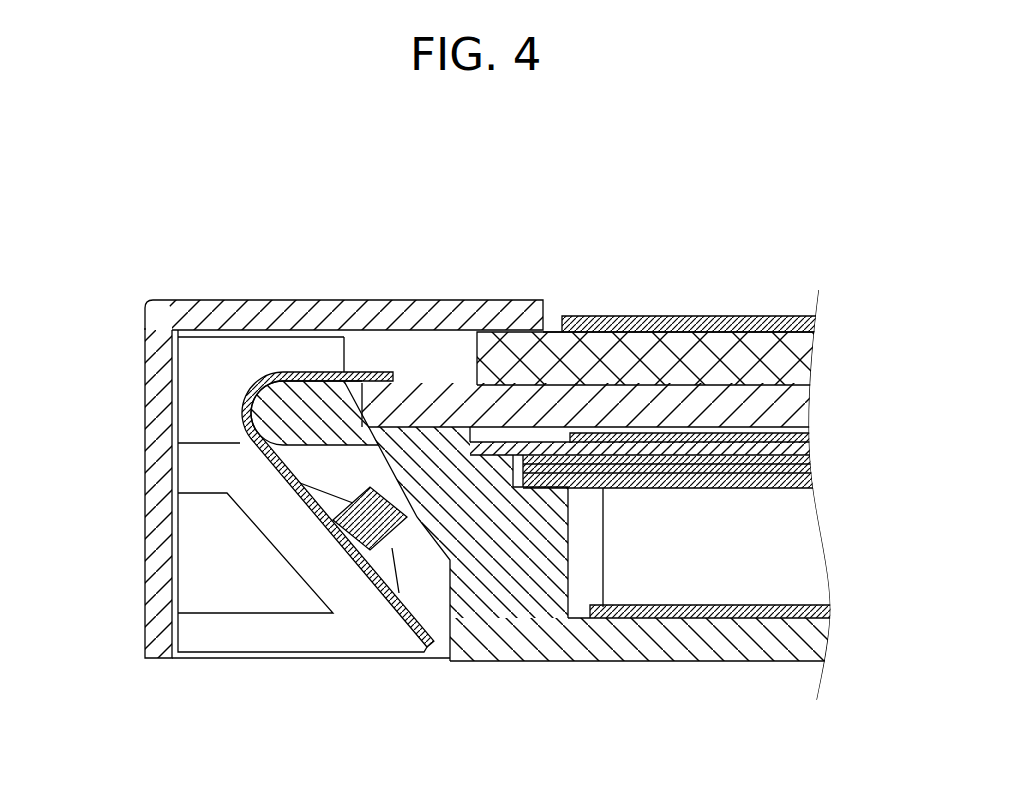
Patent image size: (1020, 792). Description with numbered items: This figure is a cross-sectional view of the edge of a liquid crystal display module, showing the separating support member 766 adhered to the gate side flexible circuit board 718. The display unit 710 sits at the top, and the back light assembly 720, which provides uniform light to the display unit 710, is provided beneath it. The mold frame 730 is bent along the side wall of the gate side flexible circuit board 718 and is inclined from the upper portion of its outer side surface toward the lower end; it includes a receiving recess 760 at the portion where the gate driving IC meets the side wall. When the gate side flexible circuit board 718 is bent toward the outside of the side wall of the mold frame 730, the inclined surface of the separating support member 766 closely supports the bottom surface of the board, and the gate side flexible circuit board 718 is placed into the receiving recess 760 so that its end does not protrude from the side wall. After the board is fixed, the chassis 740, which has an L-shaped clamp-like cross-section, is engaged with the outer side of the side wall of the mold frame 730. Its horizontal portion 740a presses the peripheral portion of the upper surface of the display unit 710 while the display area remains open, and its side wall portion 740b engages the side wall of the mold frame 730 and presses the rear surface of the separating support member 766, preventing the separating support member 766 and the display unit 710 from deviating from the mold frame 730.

The display unit 710 is at (633, 304).
The gate side flexible circuit board 718 is at (253, 381).
The back light assembly 720 is at (838, 438).
The mold frame 730 is at (624, 660).
The chassis 740 is at (355, 300).
The horizontal portion 740a is at (478, 300).
The side wall portion 740b is at (150, 534).
The receiving recess 760 is at (427, 590).
The separating support member 766 is at (292, 643).